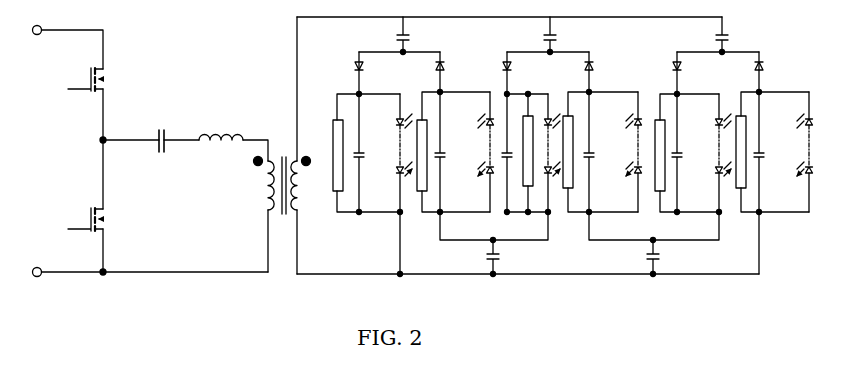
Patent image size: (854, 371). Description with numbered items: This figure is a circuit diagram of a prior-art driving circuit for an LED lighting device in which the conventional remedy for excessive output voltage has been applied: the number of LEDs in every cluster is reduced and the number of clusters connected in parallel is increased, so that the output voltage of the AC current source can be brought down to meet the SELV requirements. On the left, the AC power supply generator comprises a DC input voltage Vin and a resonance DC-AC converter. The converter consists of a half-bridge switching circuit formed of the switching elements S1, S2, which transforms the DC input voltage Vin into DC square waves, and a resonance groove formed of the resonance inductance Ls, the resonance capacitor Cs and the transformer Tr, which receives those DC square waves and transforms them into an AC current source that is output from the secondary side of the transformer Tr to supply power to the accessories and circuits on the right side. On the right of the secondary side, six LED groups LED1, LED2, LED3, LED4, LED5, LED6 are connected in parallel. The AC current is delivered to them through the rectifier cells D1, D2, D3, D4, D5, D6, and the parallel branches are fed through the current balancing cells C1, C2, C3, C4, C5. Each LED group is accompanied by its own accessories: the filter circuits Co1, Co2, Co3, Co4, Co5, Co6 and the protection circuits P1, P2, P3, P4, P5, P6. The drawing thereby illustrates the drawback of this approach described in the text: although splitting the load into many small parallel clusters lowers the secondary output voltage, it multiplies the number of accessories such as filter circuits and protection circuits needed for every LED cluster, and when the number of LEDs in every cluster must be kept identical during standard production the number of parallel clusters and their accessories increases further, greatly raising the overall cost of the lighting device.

The DC input voltage Vin is at (28, 154).
The switching element S1 is at (96, 79).
The switching element S2 is at (96, 219).
The resonance capacitor Cs is at (159, 131).
The resonance inductance Ls is at (221, 125).
The transformer Tr is at (282, 168).
The current balancing cell C1 is at (414, 36).
The current balancing cell C2 is at (501, 257).
The current balancing cell C3 is at (561, 36).
The current balancing cell C4 is at (662, 257).
The current balancing cell C5 is at (733, 36).
The rectifier cell D1 is at (372, 73).
The rectifier cell D2 is at (449, 72).
The rectifier cell D3 is at (518, 73).
The rectifier cell D4 is at (600, 72).
The rectifier cell D5 is at (690, 73).
The rectifier cell D6 is at (769, 72).
The filter circuit Co1 is at (370, 153).
The filter circuit Co2 is at (452, 152).
The filter circuit Co3 is at (508, 153).
The filter circuit Co4 is at (601, 152).
The filter circuit Co5 is at (688, 153).
The filter circuit Co6 is at (771, 152).
The LED group LED1 is at (389, 153).
The LED group LED2 is at (476, 152).
The LED group LED3 is at (552, 153).
The LED group LED4 is at (623, 152).
The LED group LED5 is at (708, 153).
The LED group LED6 is at (795, 152).
The protection circuit P1 is at (331, 152).
The protection circuit P2 is at (414, 178).
The protection circuit P3 is at (522, 160).
The protection circuit P4 is at (560, 185).
The protection circuit P5 is at (652, 158).
The protection circuit P6 is at (733, 178).